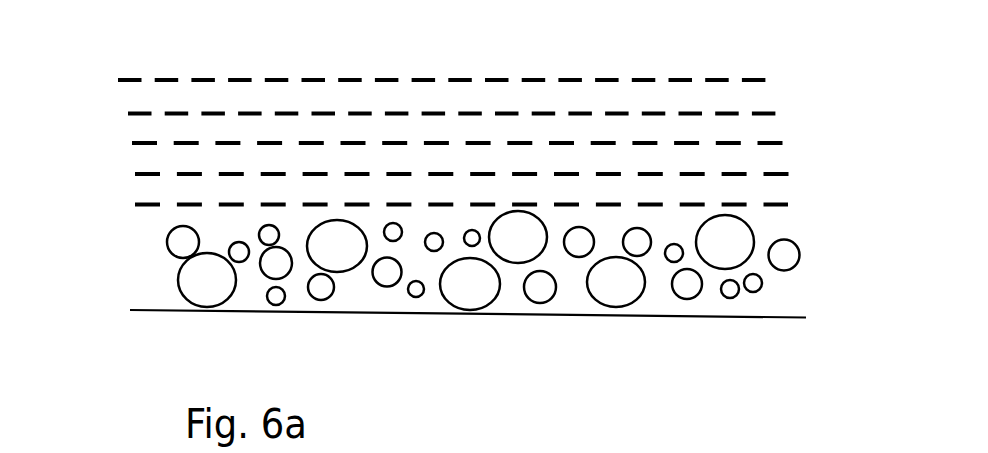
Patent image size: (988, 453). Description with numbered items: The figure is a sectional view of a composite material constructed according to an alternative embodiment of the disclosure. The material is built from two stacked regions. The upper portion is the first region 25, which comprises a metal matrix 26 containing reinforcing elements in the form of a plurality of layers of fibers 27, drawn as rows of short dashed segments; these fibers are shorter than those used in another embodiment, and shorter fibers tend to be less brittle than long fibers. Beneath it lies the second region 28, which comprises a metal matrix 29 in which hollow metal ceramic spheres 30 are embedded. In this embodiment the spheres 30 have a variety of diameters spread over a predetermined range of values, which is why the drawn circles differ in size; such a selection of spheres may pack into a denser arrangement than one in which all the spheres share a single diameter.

The first region 25 is at (835, 75).
The metal matrix 26 is at (273, 92).
The layers of fibers 27 is at (125, 82).
The second region 28 is at (833, 225).
The metal matrix 29 is at (778, 296).
The hollow metal ceramic spheres 30 is at (420, 292).